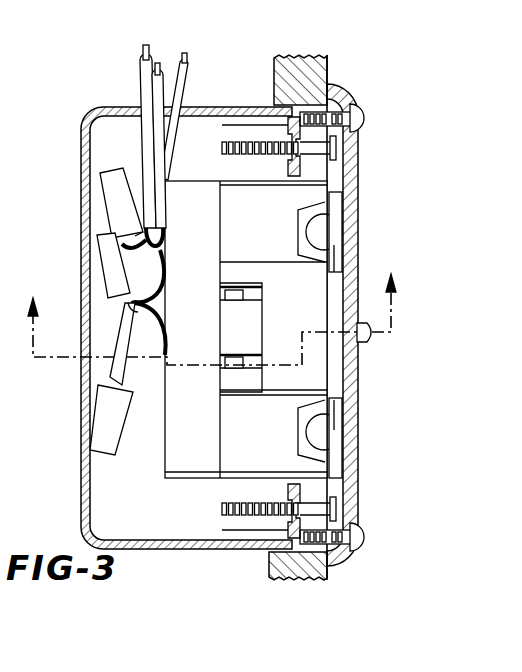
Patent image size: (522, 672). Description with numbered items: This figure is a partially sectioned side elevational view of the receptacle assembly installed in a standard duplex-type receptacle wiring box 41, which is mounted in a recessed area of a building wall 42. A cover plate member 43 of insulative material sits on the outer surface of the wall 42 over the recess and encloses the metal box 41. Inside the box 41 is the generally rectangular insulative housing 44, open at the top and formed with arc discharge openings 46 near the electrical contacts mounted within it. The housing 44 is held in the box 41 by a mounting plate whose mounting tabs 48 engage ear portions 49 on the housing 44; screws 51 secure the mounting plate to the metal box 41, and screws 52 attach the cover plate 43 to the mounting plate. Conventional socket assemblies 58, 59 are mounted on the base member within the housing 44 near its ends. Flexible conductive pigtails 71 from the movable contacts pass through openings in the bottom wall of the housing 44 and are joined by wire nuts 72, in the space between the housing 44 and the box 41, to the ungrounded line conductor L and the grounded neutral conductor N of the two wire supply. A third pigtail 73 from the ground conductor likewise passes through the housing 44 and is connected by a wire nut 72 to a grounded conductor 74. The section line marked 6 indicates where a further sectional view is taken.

The receptacle wiring box 41 is at (83, 498).
The building wall 42 is at (291, 60).
The cover plate member 43 is at (349, 97).
The housing 44 is at (195, 473).
The arc discharge openings 46 is at (245, 363).
The mounting tabs 48 is at (303, 225).
The ear portions 49 is at (322, 235).
The screws 51 is at (222, 152).
The screws 52 is at (361, 118).
The socket assembly 58 is at (342, 247).
The socket assembly 59 is at (355, 407).
The section line 6- 6 is at (202, 315).
The flexible conductive pigtails 71 is at (132, 274).
The wire nuts 72 is at (103, 188).
The third pigtail 73 is at (133, 384).
The grounded conductor 74 is at (182, 92).
The line conductor L is at (153, 97).
The neutral conductor N is at (143, 56).